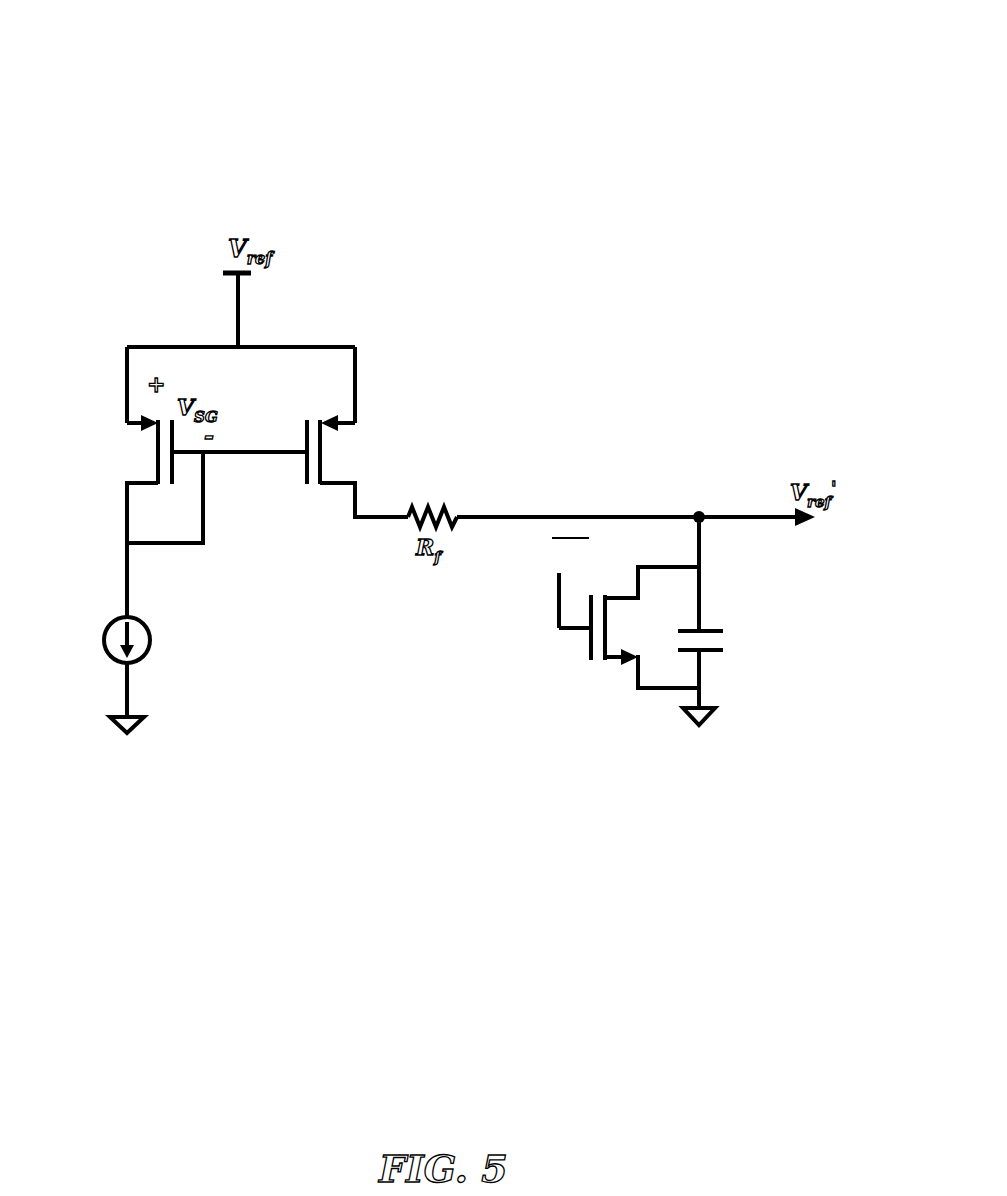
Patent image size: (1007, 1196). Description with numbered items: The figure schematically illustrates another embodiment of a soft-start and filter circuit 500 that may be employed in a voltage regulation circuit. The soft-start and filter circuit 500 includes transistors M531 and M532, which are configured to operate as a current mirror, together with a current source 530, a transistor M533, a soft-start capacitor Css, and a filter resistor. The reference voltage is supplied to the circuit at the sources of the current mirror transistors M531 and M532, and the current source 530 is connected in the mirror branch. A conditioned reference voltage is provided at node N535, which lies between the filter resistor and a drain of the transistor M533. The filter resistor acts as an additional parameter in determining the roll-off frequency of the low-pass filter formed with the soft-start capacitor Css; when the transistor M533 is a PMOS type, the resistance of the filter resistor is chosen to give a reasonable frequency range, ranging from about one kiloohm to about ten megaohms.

The soft-start and filter circuit 500 is at (675, 84).
The current source 530 is at (108, 660).
The transistor M531 is at (173, 484).
The transistor M532 is at (306, 437).
The transistor M533 is at (587, 653).
The node N535 is at (699, 511).
The soft-start capacitor Css is at (722, 651).